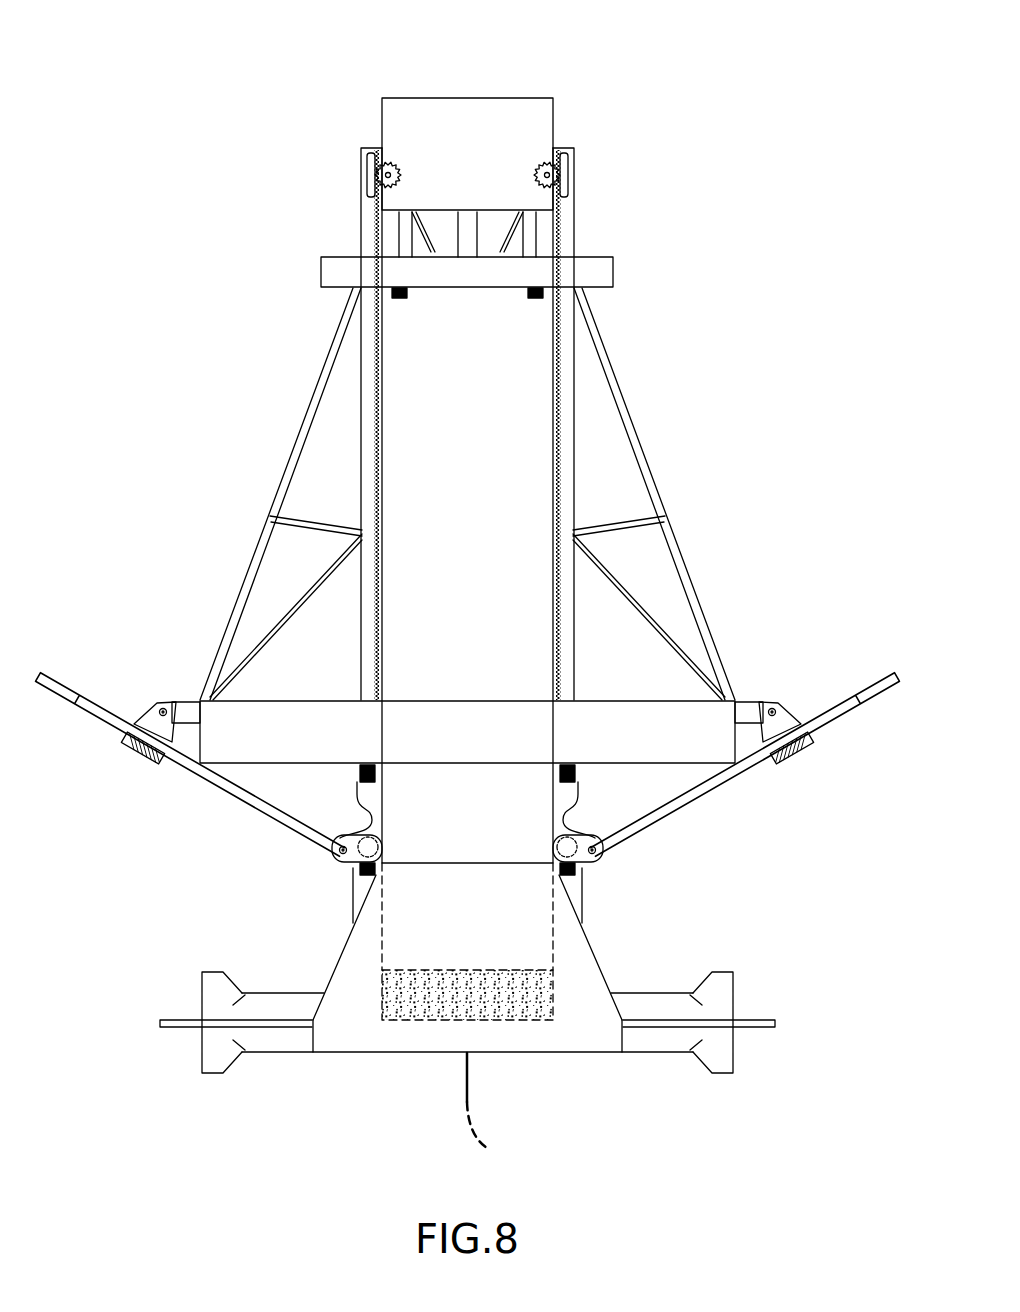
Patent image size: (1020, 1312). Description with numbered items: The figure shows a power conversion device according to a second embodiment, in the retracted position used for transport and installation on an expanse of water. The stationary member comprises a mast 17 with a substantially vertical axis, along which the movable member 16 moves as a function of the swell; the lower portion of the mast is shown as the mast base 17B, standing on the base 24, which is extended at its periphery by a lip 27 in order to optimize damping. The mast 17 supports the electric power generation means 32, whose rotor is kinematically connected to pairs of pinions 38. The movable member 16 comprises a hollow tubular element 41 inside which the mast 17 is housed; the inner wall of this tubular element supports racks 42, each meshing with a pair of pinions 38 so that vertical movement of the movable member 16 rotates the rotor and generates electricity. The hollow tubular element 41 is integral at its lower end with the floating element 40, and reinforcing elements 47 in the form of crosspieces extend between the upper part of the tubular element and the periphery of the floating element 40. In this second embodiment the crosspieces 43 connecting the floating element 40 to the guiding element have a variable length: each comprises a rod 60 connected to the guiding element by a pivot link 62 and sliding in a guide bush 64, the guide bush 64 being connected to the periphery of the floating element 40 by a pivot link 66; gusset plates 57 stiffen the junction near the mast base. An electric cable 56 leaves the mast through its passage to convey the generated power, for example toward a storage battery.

The movable member 16 is at (687, 390).
The mast 17 is at (497, 368).
The mast base 17B is at (427, 1058).
The base 24 is at (668, 1003).
The lip 27 is at (757, 1018).
The electric power generation means 32 is at (498, 142).
The pinions 38 is at (386, 175).
The floating element 40 is at (673, 715).
The hollow tubular element 41 is at (590, 445).
The racks 42 is at (385, 440).
The crosspieces 43 is at (748, 782).
The reinforcing elements 47 is at (248, 578).
The electric cable 56 is at (470, 1077).
The gusset plate 57 is at (357, 882).
The rod 60 is at (262, 805).
The pivot link 62 is at (332, 857).
The guide bush 64 is at (140, 722).
The pivot link 66 is at (160, 704).